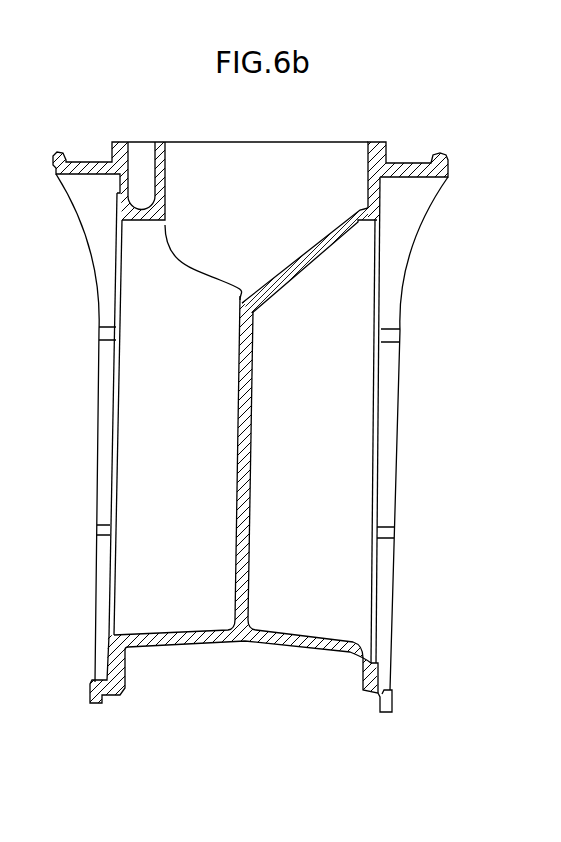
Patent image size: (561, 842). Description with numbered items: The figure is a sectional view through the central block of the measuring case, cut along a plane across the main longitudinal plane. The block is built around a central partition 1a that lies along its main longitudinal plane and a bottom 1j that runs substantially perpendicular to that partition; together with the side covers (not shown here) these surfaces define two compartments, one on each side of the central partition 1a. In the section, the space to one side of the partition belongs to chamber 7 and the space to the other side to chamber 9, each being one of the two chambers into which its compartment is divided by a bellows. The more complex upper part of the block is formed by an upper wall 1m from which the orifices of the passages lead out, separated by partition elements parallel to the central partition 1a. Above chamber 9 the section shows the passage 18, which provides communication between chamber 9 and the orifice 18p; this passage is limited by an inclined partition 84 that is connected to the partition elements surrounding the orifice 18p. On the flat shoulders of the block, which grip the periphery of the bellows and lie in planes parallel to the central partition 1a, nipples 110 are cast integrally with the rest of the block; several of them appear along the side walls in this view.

The orifice 18p is at (305, 148).
The passage 18 is at (270, 239).
The upper wall 1m is at (410, 165).
The inclined partition 84 is at (312, 252).
The chamber 9 is at (185, 445).
The chamber 7 is at (320, 445).
The nipples 110 is at (100, 335).
The central partition 1a is at (253, 524).
The bottom 1j is at (280, 638).